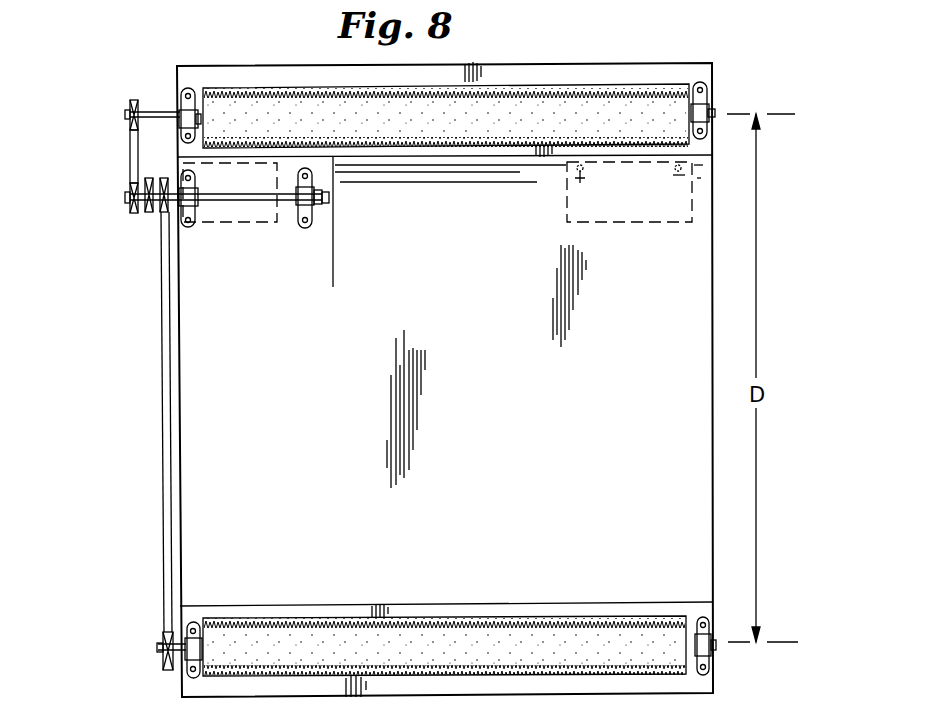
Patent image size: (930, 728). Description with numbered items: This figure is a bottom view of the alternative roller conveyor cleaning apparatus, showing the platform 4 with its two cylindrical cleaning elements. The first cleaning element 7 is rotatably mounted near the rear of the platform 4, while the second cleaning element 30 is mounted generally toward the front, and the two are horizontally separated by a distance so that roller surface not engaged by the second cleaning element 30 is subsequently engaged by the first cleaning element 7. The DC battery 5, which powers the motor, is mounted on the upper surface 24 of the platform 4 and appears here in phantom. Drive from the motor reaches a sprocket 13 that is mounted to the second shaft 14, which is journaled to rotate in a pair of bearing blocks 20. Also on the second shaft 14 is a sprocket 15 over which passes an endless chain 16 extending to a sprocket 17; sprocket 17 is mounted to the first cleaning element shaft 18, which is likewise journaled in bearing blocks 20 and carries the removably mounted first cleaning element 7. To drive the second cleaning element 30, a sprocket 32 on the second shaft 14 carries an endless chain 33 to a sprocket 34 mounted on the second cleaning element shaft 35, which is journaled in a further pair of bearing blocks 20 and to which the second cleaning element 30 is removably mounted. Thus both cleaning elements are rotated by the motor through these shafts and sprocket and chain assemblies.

The platform 4 is at (178, 372).
The DC battery 5 is at (669, 224).
The first cleaning element 7 is at (327, 618).
The sprocket 13 is at (149, 213).
The second shaft 14 is at (126, 196).
The sprocket 15 is at (165, 178).
The endless chain 16 is at (162, 468).
The sprocket 17 is at (165, 668).
The first cleaning element shaft 18 is at (157, 647).
The bearing blocks 20 is at (700, 84).
The upper surface 24 is at (465, 331).
The second cleaning element 30 is at (187, 93).
The sprocket 32 is at (130, 212).
The endless chain 33 is at (130, 151).
The sprocket 34 is at (131, 102).
The second cleaning element shaft 35 is at (126, 116).